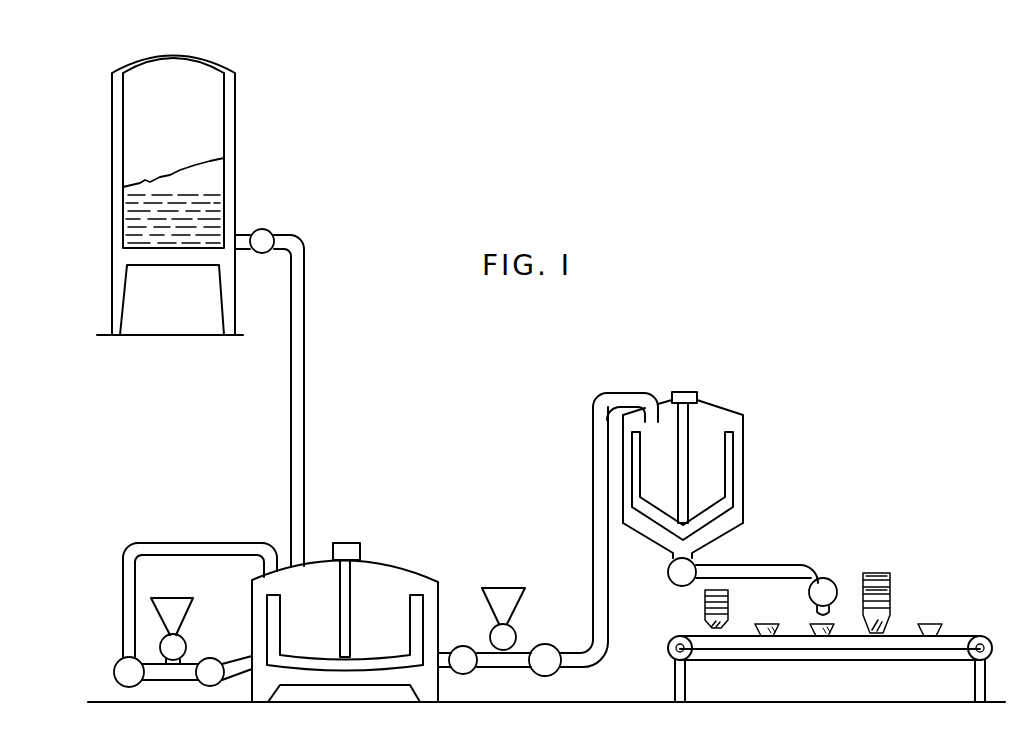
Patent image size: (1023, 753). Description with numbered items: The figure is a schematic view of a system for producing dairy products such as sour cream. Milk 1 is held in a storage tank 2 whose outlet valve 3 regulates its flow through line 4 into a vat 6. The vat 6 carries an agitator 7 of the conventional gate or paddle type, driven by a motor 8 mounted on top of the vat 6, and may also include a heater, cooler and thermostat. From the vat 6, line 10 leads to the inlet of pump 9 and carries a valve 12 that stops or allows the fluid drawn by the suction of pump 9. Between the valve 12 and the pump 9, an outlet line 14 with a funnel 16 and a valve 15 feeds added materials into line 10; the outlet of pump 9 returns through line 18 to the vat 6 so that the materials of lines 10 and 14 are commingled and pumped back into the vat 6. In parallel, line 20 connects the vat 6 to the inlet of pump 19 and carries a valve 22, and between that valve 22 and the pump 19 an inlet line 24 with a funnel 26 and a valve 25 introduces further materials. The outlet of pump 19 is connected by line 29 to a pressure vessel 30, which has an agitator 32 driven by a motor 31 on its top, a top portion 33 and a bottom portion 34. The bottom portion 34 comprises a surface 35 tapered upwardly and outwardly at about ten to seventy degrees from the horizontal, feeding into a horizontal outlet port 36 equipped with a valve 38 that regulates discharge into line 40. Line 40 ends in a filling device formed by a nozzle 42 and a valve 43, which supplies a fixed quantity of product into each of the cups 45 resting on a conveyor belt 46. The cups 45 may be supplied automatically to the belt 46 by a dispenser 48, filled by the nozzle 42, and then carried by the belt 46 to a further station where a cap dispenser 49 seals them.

The milk 1 is at (140, 203).
The storage tank 2 is at (236, 133).
The outlet valve 3 is at (264, 228).
The line 4 is at (305, 362).
The vat 6 is at (386, 572).
The agitator 7 is at (345, 625).
The motor 8 is at (355, 546).
The pump 9 is at (127, 683).
The line 10 is at (245, 668).
The valve 12 is at (216, 655).
The outlet line 14 is at (166, 660).
The valve 15 is at (160, 645).
The funnel 16 is at (170, 608).
The line 18 is at (211, 551).
The pump 19 is at (556, 672).
The line 20 is at (506, 656).
The valve 22 is at (471, 622).
The inlet line 24 is at (514, 651).
The valve 25 is at (512, 633).
The funnel 26 is at (507, 590).
The line 29 is at (600, 447).
The pressure vessel 30 is at (744, 463).
The motor 31 is at (690, 392).
The agitator 32 is at (735, 485).
The top portion 33 is at (622, 479).
The bottom portion 34 is at (737, 530).
The surface 35 is at (660, 540).
The outlet port 36 is at (695, 560).
The valve 38 is at (668, 571).
The line 40 is at (812, 571).
The nozzle 42 is at (818, 610).
The valve 43 is at (833, 587).
The cups 45 is at (812, 640).
The conveyor belt 46 is at (938, 660).
The dispenser 48 is at (705, 616).
The cap dispenser 49 is at (889, 612).